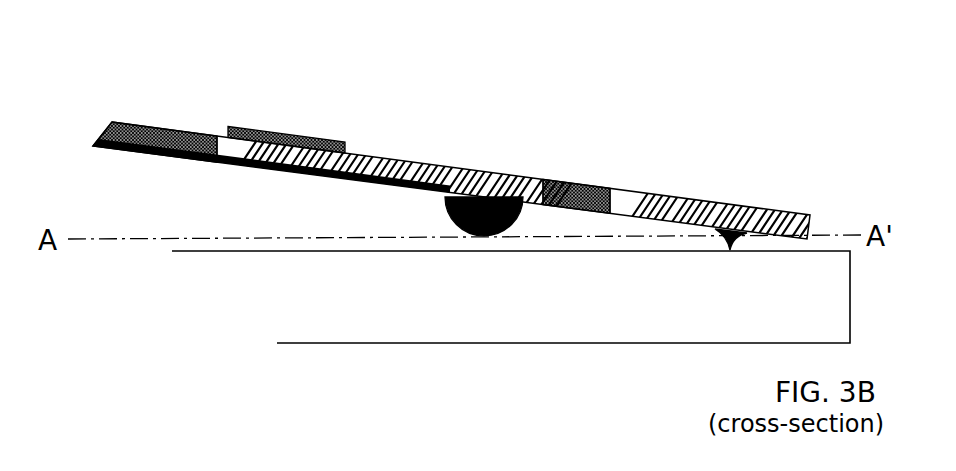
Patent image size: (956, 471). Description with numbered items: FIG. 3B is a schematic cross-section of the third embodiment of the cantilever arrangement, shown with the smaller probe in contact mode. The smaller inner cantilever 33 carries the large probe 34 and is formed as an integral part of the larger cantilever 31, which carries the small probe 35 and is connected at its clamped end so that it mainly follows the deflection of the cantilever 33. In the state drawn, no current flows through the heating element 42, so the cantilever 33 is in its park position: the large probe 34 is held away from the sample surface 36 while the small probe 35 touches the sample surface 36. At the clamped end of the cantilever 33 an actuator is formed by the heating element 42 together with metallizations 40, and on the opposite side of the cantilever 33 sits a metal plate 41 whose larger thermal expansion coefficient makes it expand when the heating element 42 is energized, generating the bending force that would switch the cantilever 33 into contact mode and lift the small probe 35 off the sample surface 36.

The larger cantilever 31 is at (610, 187).
The cantilever 33 is at (392, 155).
The large probe 34 is at (497, 172).
The small probe 35 is at (730, 227).
The sample surface 36 is at (538, 320).
The metallizations 40 is at (177, 162).
The metal plate 41 is at (263, 128).
The heating element 42 is at (323, 177).